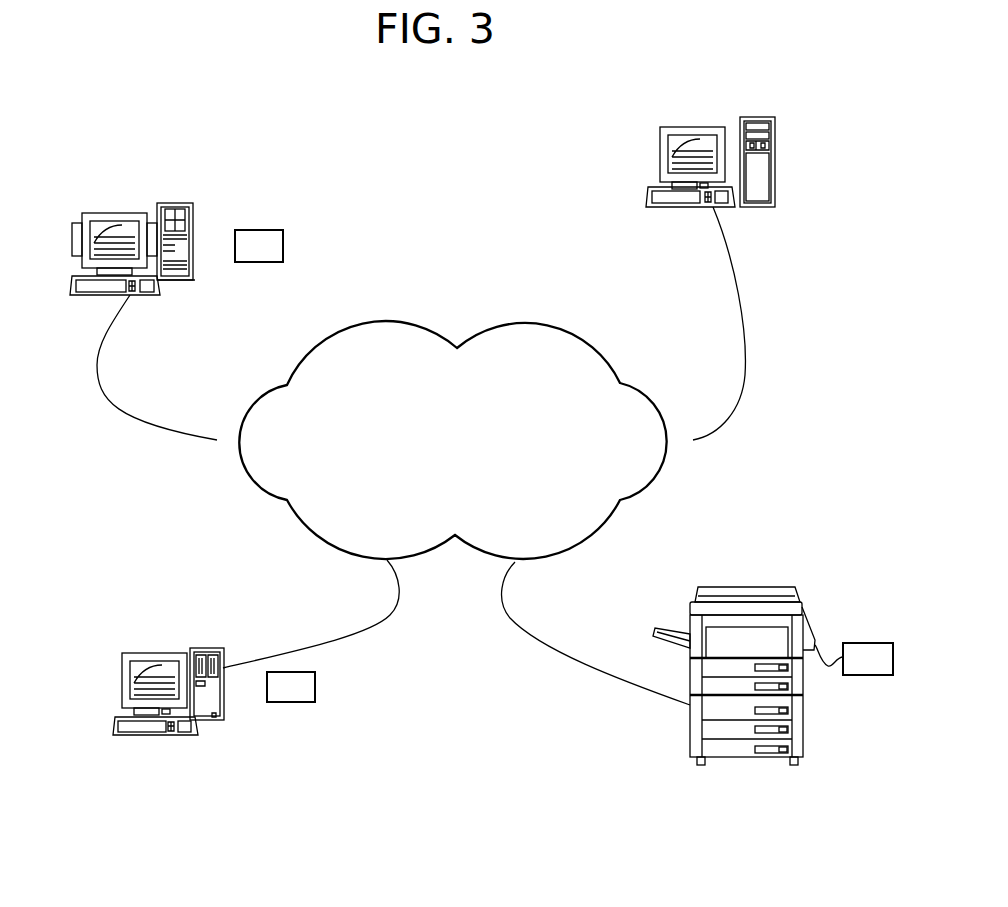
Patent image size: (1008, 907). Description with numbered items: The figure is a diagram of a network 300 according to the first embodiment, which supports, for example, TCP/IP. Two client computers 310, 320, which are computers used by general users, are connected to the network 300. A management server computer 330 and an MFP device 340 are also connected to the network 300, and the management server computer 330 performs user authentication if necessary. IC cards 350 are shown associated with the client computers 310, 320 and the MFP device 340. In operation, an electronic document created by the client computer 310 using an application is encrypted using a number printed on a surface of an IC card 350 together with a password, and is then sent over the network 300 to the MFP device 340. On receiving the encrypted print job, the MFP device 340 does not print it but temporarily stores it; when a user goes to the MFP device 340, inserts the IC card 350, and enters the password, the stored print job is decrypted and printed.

The network 300 is at (412, 324).
The client computer 310 is at (126, 212).
The client computer 320 is at (157, 652).
The management server computer 330 is at (694, 123).
The MFP device 340 is at (746, 585).
The IC card 350 is at (259, 229).